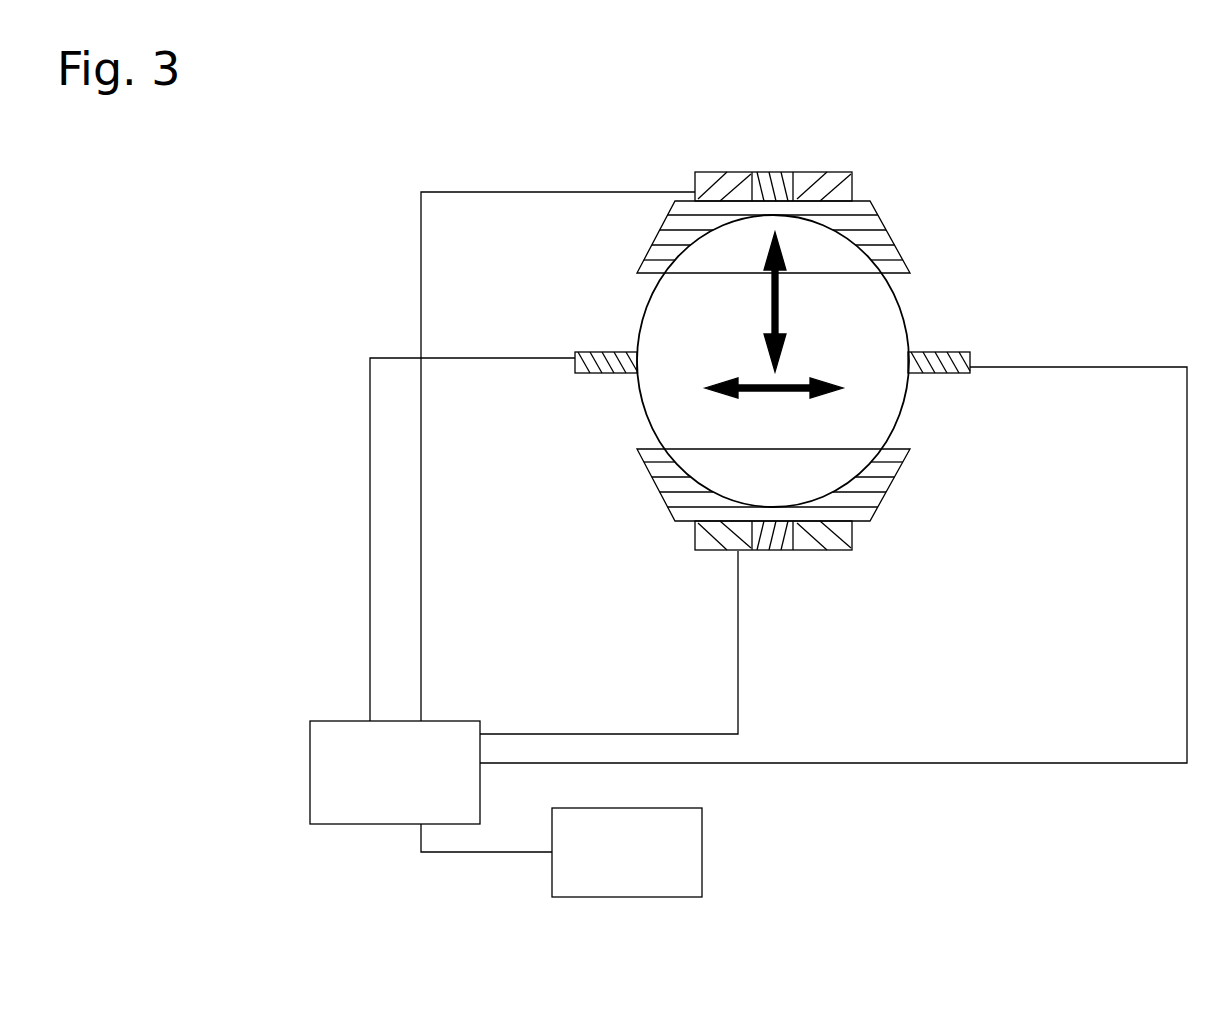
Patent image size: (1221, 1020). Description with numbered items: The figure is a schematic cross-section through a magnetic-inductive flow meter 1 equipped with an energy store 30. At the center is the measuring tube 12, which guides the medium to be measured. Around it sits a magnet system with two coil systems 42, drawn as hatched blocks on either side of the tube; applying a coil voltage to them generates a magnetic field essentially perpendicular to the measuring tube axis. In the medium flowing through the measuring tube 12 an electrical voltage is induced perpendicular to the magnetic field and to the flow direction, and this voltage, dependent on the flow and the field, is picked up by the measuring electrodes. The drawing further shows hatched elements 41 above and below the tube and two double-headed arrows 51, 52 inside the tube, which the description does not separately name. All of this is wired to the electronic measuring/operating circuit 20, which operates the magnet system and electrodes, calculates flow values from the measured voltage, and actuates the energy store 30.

The optical device 1 is at (532, 157).
The measuring tube 12 is at (908, 322).
The first actuators 41 is at (862, 147).
The coil systems 42 is at (605, 340).
The first movement direction 51 is at (810, 302).
The second movement direction 52 is at (774, 414).
The electronic measuring/operating circuit 20 is at (395, 772).
The energy store 30 is at (627, 852).